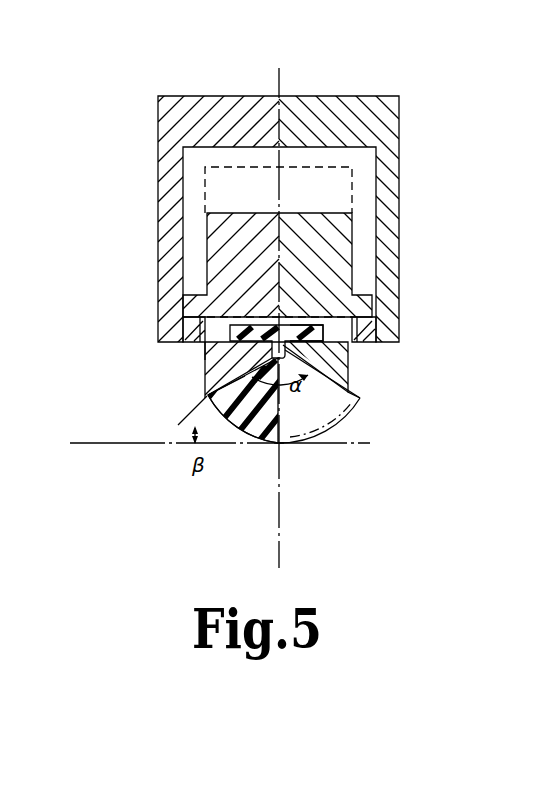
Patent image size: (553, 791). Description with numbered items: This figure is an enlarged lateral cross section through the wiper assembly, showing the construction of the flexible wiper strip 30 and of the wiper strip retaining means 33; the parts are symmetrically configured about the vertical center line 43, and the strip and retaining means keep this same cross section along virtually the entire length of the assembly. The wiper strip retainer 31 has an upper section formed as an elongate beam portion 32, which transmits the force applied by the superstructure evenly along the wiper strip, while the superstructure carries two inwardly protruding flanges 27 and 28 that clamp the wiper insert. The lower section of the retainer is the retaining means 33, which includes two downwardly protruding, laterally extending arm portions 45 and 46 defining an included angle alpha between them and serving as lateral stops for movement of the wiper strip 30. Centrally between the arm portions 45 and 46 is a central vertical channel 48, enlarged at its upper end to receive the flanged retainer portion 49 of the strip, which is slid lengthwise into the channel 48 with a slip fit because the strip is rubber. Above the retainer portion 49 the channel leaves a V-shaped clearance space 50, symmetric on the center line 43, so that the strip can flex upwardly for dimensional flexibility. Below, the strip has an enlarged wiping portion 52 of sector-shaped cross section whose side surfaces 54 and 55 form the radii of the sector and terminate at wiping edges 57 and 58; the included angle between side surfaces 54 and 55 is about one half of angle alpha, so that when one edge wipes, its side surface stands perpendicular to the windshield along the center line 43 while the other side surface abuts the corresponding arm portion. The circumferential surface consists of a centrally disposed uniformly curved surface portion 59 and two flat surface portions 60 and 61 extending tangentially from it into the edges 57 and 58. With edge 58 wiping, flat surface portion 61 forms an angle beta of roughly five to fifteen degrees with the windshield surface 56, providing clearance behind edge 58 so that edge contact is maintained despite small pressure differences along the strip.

The vertical center line 43 is at (281, 78).
The elongate beam portion 32 is at (222, 213).
The wiper strip retainer 31 is at (226, 273).
The side surface 54 is at (258, 372).
The clearance space 50 is at (292, 329).
The inwardly protruding flange 27 is at (157, 334).
The inwardly protruding flange 28 is at (372, 333).
The wiper strip retaining means 33 is at (205, 352).
The arm portion 45 is at (205, 378).
The retainer portion 49 is at (325, 331).
The central vertical channel 48 is at (300, 357).
The arm portion 46 is at (346, 386).
The flexible wiper strip 30 is at (362, 400).
The side surface 55 is at (335, 405).
The edge 57 is at (202, 397).
The enlarged wiping portion 52 is at (202, 410).
The windshield surface 56 is at (105, 444).
The flat surface portion 60 is at (196, 424).
The edge 58 is at (281, 445).
The curved surface portion 59 is at (233, 444).
The flat surface portion 61 is at (268, 444).